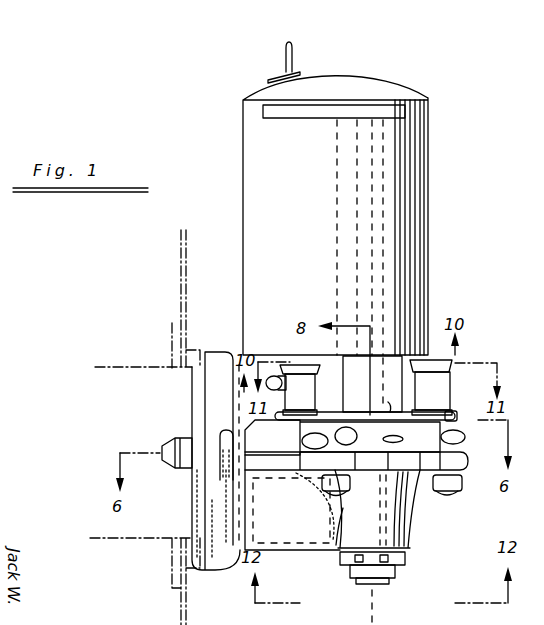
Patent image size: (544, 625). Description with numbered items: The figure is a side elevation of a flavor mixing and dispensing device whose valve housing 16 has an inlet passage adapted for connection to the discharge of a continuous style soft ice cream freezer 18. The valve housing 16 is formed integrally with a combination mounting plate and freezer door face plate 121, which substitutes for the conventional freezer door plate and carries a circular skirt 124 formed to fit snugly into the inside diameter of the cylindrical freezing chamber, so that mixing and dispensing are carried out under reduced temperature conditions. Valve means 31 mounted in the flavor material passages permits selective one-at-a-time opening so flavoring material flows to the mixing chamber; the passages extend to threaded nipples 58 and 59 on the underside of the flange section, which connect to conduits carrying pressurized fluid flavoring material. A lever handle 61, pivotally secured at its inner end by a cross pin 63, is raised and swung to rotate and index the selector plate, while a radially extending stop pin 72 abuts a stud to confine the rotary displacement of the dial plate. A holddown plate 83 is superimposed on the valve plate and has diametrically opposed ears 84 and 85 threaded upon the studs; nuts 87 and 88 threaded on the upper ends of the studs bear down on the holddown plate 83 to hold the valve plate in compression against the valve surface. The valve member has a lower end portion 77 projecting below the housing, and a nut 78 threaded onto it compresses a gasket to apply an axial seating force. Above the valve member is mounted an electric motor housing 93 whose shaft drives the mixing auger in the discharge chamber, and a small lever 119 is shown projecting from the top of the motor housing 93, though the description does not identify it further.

The valve housing 16 is at (412, 521).
The continuous style soft ice cream freezer 18 is at (190, 272).
The valve means 31 is at (368, 428).
The threaded nipple 58 is at (453, 498).
The threaded nipple 59 is at (342, 500).
The handle 61 is at (345, 446).
The cross pin 63 is at (352, 470).
The stop pin 72 is at (465, 437).
The lower end portion 77 is at (393, 582).
The nut 78 is at (400, 560).
The holddown plate 83 is at (395, 412).
The ear 84 is at (455, 417).
The ear 85 is at (278, 414).
The nut 87 is at (293, 390).
The nut 88 is at (432, 388).
The electric motor housing 93 is at (412, 230).
The lever 119 is at (299, 52).
The combination mounting plate and freezer door face plate 121 is at (222, 355).
The circular skirt 124 is at (290, 437).